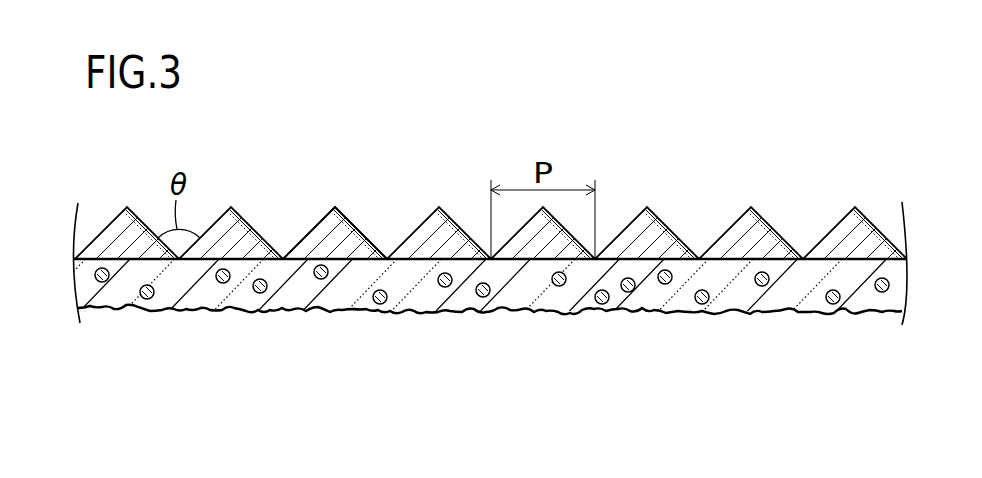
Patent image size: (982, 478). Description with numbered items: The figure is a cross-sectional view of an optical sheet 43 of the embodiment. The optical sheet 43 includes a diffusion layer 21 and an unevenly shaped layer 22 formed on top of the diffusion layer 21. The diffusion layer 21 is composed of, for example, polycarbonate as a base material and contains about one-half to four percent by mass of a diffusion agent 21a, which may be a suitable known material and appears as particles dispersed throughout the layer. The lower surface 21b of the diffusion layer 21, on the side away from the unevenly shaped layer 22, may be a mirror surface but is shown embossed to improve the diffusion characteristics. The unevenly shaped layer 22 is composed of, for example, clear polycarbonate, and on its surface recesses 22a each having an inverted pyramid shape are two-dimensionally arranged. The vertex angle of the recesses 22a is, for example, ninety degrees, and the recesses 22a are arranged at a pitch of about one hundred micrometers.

The diffusion layer 21 is at (112, 299).
The diffusion agent 21a is at (825, 300).
The surface (lower surface) of the diffusion layer 21b is at (829, 313).
The unevenly shaped layer 22 is at (100, 245).
The recess 22a is at (382, 208).
The optical sheet 43 is at (789, 183).